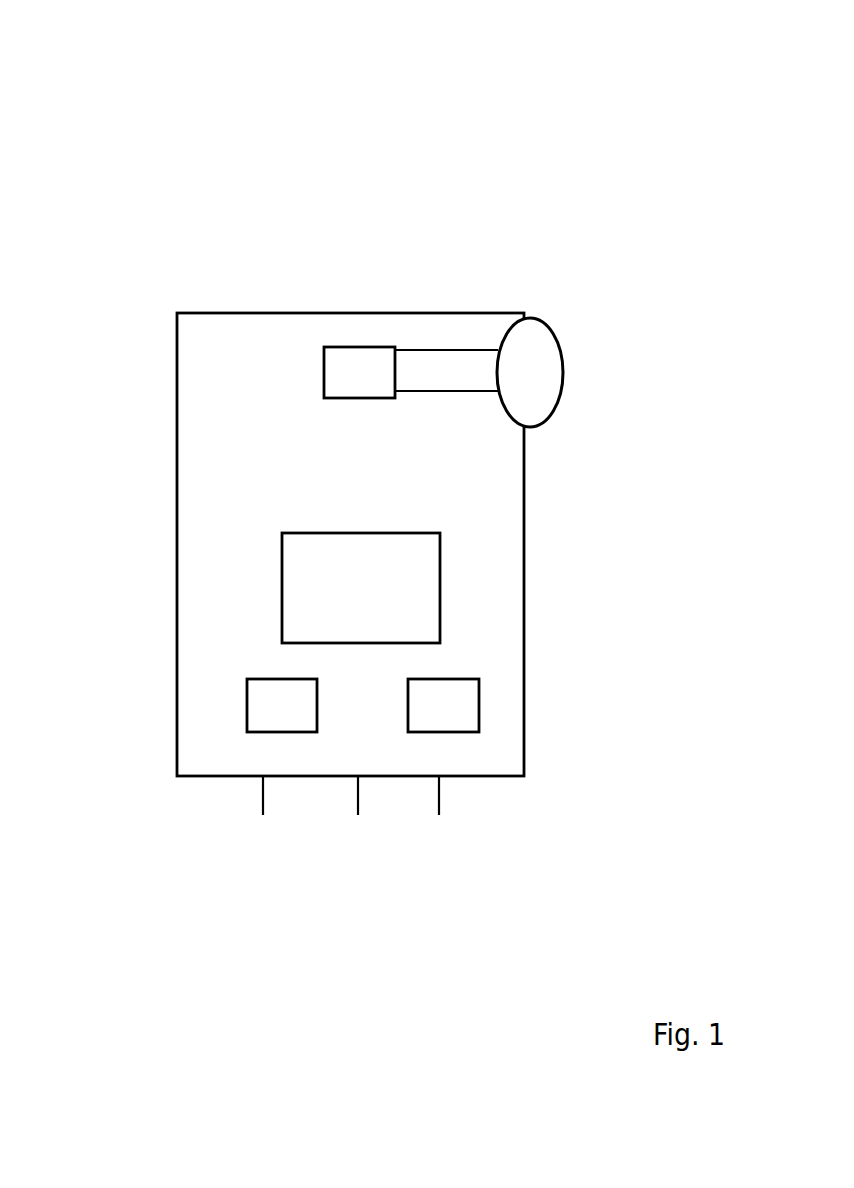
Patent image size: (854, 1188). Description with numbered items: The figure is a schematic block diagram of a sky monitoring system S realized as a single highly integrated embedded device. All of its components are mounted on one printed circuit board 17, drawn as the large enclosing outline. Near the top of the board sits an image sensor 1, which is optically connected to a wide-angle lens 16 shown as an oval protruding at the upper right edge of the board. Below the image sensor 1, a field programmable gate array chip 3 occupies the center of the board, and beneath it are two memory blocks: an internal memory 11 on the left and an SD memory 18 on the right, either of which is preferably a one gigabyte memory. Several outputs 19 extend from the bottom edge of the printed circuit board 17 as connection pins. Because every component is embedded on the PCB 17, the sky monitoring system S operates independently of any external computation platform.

The sky monitoring system S is at (165, 222).
The image sensor 1 is at (344, 372).
The field programmable gate array (FPGA) chip 3 is at (412, 599).
The internal memory 11 is at (263, 711).
The wide-angle lens 16 is at (552, 345).
The printed circuit board (PCB) 17 is at (218, 479).
The SD memory 18 is at (463, 701).
The outputs 19 is at (357, 795).